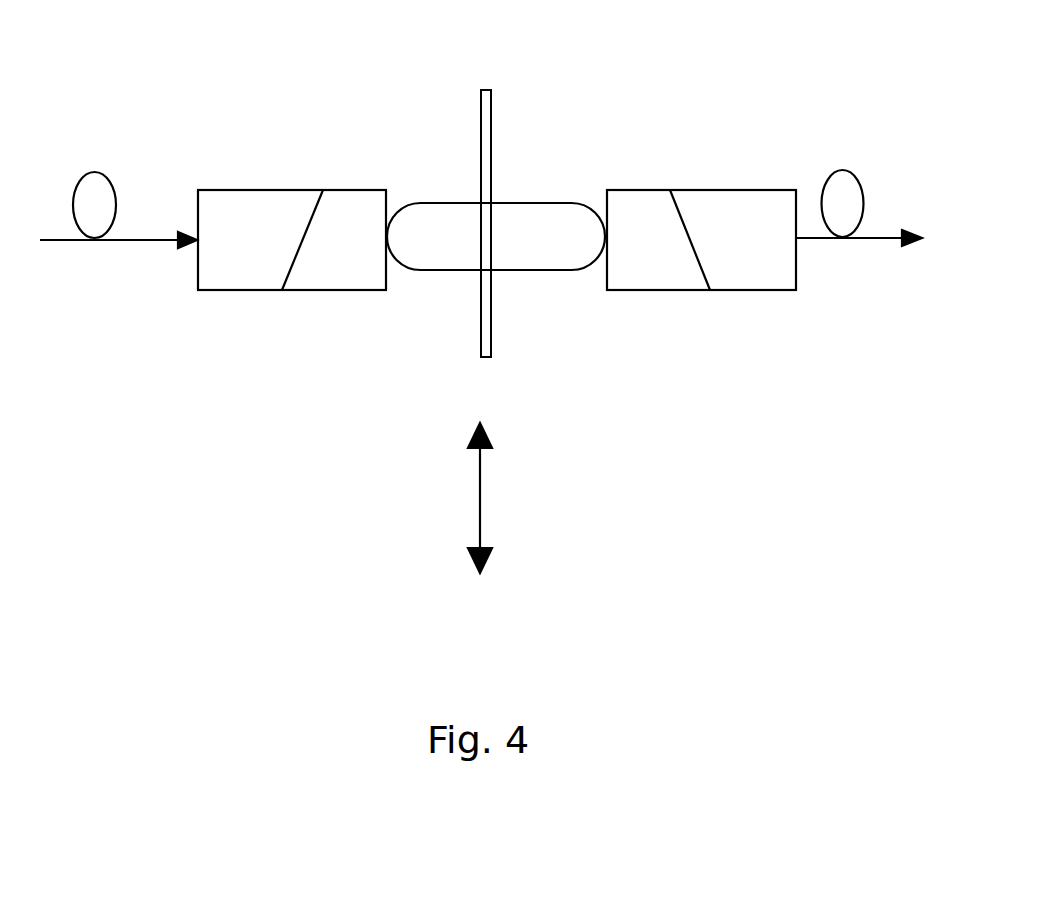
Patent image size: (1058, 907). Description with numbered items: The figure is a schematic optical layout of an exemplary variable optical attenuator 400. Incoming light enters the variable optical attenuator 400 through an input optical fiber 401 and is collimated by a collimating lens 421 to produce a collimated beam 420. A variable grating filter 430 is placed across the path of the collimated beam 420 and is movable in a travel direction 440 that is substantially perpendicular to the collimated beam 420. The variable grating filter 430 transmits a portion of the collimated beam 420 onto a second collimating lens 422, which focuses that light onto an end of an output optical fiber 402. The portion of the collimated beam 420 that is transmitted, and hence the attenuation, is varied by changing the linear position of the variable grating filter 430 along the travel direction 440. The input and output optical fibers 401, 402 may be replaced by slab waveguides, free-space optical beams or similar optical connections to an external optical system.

The variable optical attenuator 400 is at (305, 495).
The input optical fiber 401 is at (98, 168).
The output optical fiber 402 is at (853, 167).
The collimated beam 420 is at (550, 203).
The collimating lens 421 is at (305, 290).
The collimating lens 422 is at (753, 290).
The variable grating filter 430 is at (497, 108).
The travel direction 440 is at (483, 507).